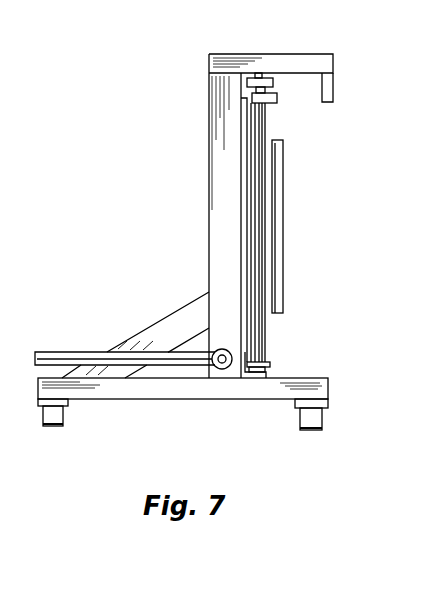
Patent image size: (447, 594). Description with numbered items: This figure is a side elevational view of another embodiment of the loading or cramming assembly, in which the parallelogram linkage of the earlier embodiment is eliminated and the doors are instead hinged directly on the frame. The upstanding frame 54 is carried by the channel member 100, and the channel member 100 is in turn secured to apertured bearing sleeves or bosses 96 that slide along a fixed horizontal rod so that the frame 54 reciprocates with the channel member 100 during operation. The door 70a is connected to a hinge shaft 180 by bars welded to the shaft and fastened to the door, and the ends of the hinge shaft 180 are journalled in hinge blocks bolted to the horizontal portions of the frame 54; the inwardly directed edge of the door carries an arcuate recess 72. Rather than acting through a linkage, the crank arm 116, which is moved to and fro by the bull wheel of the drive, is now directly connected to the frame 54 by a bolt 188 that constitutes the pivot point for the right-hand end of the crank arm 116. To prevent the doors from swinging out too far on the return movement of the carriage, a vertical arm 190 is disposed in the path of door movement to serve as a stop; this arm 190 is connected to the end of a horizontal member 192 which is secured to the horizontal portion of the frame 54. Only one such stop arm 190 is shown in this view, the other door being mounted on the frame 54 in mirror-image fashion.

The horizontal member 192 is at (291, 59).
The vertical arm 190 is at (333, 78).
The door 70a is at (273, 123).
The hinge shaft 180 is at (260, 162).
The frame 54 is at (218, 231).
The arcuate recess 72 is at (280, 245).
The crank arm 116 is at (63, 353).
The bolt 188 is at (221, 369).
The channel member 100 is at (263, 392).
The bearing sleeve 96 is at (53, 418).